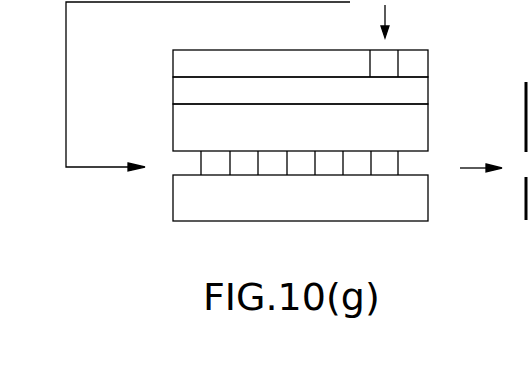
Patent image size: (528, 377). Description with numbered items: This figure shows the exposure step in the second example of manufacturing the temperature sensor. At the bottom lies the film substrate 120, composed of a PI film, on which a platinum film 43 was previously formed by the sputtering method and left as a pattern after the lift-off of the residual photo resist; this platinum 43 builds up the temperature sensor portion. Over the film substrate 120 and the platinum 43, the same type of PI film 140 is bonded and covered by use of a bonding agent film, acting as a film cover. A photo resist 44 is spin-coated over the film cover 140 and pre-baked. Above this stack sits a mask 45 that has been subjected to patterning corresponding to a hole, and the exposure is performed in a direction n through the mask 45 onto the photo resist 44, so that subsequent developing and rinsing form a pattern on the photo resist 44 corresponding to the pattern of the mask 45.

The exposure direction n is at (388, 16).
The mask 45 is at (193, 61).
The photo resist 44 is at (405, 88).
The PI film 140 is at (405, 127).
The platinum film 43 is at (387, 163).
The film substrate 120 is at (401, 212).